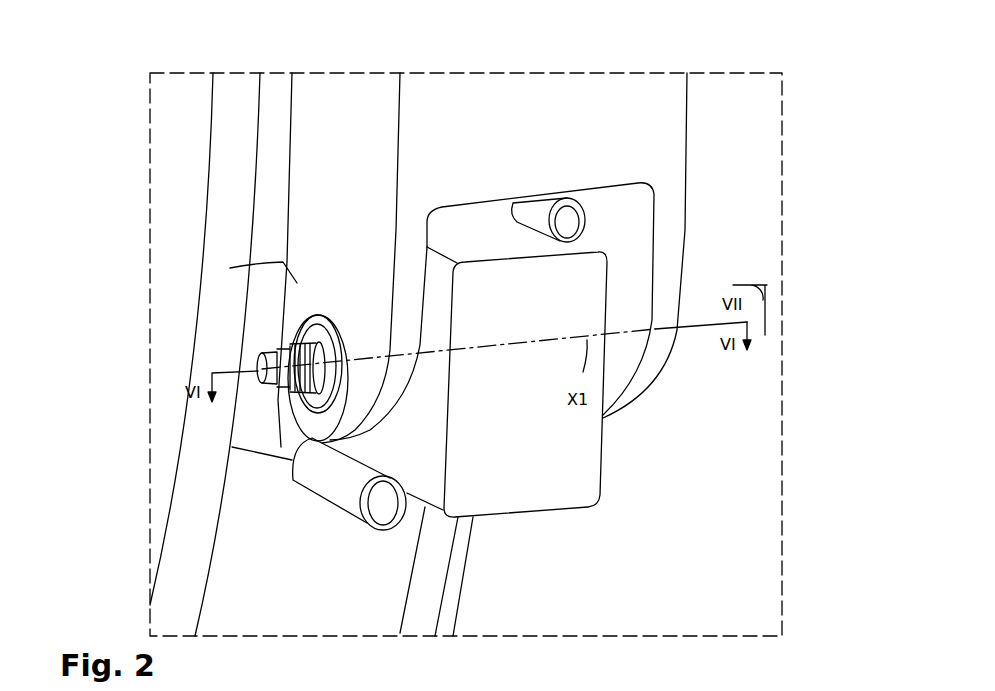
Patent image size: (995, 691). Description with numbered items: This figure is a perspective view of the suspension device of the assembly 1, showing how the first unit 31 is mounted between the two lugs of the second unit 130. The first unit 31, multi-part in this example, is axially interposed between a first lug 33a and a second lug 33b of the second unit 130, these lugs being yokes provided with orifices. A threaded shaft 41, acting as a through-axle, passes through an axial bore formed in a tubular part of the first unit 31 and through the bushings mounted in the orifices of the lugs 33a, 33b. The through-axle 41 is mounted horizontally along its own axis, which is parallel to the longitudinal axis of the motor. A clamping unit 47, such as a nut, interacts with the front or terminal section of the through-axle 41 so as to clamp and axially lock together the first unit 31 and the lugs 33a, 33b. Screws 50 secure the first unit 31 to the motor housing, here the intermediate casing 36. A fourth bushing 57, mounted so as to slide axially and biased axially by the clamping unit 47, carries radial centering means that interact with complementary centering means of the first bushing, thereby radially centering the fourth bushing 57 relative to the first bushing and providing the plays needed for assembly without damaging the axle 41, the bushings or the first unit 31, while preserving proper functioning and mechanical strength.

The actuating drive assembly 1 is at (133, 87).
The first unit 31 is at (627, 444).
The first lug 33a is at (297, 284).
The second lug 33b is at (667, 265).
The intermediate casing 36 is at (183, 551).
The threaded shaft 41 is at (260, 387).
The clamping unit 47 is at (260, 370).
The screws 50 is at (576, 220).
The fourth bushing 57 is at (310, 330).
The second unit 130 is at (614, 118).